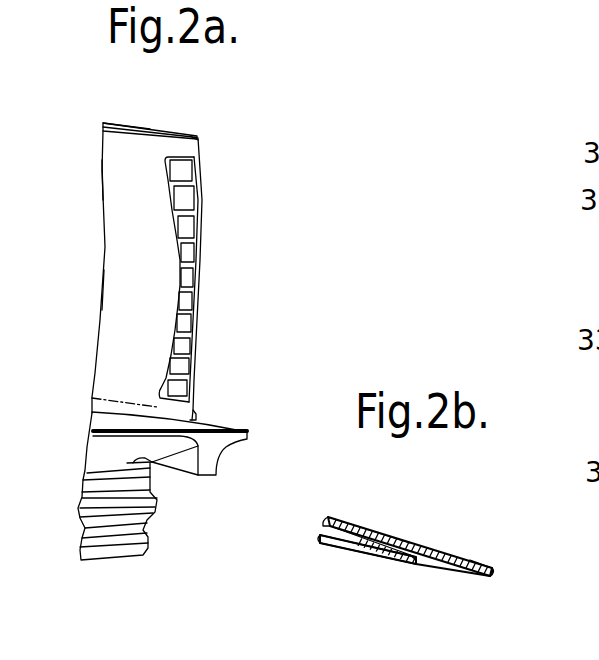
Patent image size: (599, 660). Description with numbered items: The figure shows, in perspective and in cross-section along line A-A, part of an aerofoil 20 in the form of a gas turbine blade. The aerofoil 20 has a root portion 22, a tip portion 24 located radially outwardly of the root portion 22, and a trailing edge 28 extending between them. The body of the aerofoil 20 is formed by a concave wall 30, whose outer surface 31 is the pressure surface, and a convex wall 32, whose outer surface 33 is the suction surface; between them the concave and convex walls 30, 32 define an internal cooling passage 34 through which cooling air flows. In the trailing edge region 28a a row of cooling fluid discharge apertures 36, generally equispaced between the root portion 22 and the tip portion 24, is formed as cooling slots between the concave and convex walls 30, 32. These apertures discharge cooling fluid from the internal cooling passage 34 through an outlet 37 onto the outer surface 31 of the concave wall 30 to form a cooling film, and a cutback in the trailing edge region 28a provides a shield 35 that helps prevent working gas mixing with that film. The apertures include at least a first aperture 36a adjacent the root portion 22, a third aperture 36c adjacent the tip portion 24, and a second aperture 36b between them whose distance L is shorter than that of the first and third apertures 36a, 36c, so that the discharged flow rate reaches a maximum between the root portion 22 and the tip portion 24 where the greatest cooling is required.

In FIG. 2A, the aerofoil 20 is at (242, 113).
In FIG. 2A, the root portion 22 is at (103, 403).
In FIG. 2A, the tip portion 24 is at (142, 127).
In FIG. 2A, the trailing edge 28 is at (200, 295).
In FIG. 2B, the trailing edge 28 is at (493, 572).
In FIG. 2A, the trailing edge region 28a is at (198, 128).
In FIG. 2B, the trailing edge region 28a is at (446, 522).
In FIG. 2A, the concave wall 30 is at (115, 170).
In FIG. 2B, the concave wall 30 is at (322, 543).
In FIG. 2A, the outer surface of concave wall 31 is at (120, 280).
In FIG. 2B, the outer surface of concave wall 31 is at (377, 557).
In FIG. 2A, the convex wall 32 is at (110, 124).
In FIG. 2B, the convex wall 32 is at (343, 517).
In FIG. 2B, the outer surface of convex wall 33 is at (403, 537).
In FIG. 2B, the internal cooling passage 34 is at (352, 540).
In FIG. 2B, the shield 35 is at (431, 585).
In FIG. 2A, the cooling fluid discharge apertures 36 is at (165, 383).
In FIG. 2B, the cooling fluid discharge apertures 36 is at (415, 562).
In FIG. 2A, the first aperture 36a is at (175, 392).
In FIG. 2A, the second aperture 36b is at (192, 276).
In FIG. 2A, the third aperture 36c is at (183, 170).
In FIG. 2B, the outlet 37 is at (443, 572).